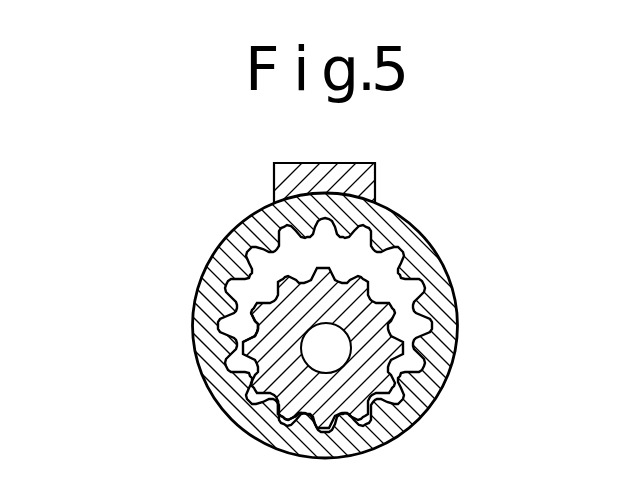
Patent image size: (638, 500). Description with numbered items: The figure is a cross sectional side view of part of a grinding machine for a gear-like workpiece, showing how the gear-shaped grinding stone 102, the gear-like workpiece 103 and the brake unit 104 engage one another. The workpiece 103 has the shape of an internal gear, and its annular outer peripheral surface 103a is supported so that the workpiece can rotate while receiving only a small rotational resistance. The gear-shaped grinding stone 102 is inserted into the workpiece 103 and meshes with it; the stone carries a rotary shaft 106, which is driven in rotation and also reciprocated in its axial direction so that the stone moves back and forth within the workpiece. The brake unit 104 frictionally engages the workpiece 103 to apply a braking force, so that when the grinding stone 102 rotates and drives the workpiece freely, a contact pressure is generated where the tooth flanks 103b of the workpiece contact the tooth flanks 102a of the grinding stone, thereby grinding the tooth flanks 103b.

The gear-shaped grinding stone 102 is at (297, 300).
The tooth flanks of the gear-shaped grinding stone 102a is at (285, 420).
The gear-like workpiece 103 is at (421, 241).
The annular outer peripheral surface of the workpiece 103a is at (425, 372).
The tooth flanks of the workpiece 103b is at (255, 272).
The brake unit 104 is at (363, 180).
The rotary shaft 106 is at (337, 350).